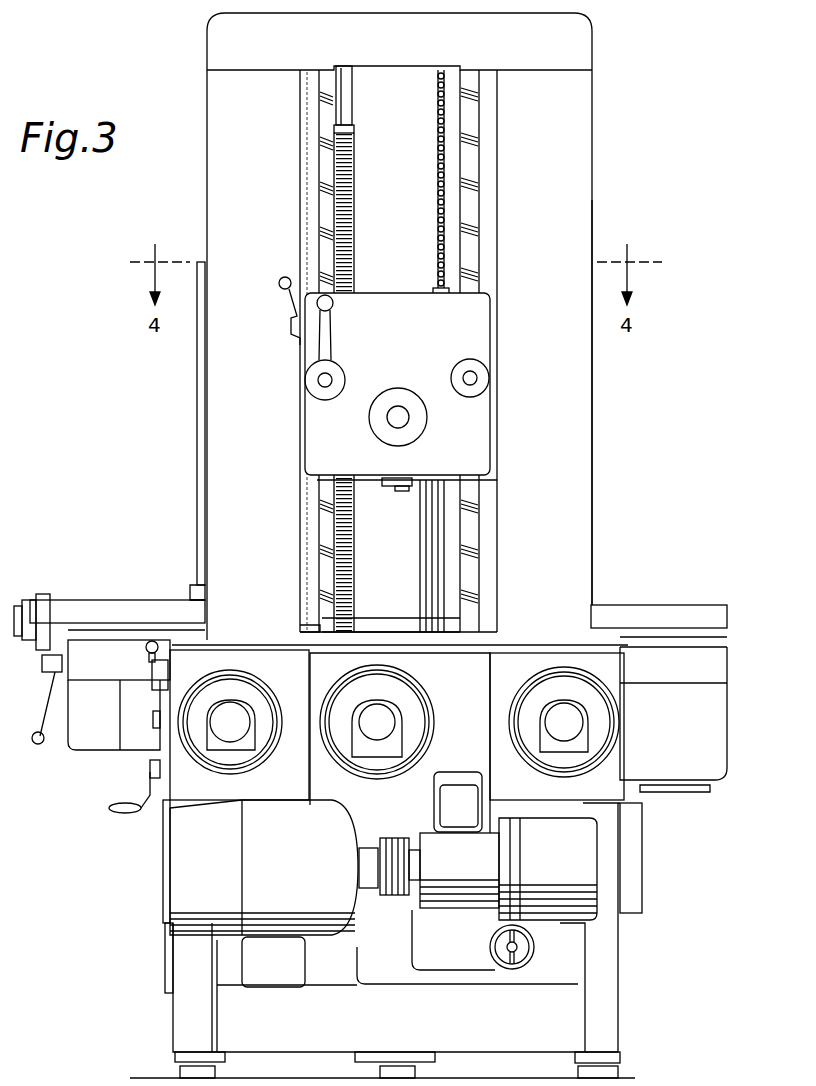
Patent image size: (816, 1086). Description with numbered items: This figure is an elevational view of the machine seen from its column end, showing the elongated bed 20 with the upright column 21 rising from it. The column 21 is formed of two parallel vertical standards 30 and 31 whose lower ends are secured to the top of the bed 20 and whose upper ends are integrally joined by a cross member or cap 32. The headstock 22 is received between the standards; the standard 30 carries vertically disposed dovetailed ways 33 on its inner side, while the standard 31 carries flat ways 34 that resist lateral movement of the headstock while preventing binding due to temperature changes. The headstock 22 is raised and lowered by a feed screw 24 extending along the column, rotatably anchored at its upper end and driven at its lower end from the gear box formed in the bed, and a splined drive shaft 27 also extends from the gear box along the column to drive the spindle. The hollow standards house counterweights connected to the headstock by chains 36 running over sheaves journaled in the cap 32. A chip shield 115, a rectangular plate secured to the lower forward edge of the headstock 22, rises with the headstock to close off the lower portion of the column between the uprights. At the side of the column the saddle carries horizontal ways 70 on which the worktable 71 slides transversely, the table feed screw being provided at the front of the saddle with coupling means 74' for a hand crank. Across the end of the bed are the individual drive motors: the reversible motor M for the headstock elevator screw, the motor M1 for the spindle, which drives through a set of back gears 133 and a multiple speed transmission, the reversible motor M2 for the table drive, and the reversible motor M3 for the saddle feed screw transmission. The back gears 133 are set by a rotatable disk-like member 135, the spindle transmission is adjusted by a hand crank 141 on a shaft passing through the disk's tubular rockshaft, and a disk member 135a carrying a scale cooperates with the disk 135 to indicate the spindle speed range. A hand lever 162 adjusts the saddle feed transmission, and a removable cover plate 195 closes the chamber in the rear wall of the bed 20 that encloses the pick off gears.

The bed 20 is at (186, 980).
The column 21 is at (592, 148).
The headstock 22 is at (482, 456).
The feed screw 24 is at (342, 218).
The splined drive shaft 27 is at (436, 565).
The standard 30 is at (215, 415).
The standard 31 is at (585, 393).
The cross member or cap 32 is at (213, 26).
The dovetailed ways 33 is at (333, 188).
The flat ways 34 is at (470, 202).
The chains 36 is at (437, 243).
The horizontal ways 70 is at (126, 612).
The worktable 71 is at (190, 596).
The coupling means 74' is at (27, 608).
The chip shield 115 is at (362, 580).
The back gears 133 is at (425, 832).
The disk-like member 135 is at (153, 718).
The disk member 135a is at (152, 760).
The hand crank 141 is at (145, 820).
The hand lever 162 is at (152, 664).
The removable cover plate 195 is at (645, 850).
The reversible electric motor M is at (406, 690).
The electric motor M1 is at (185, 878).
The reversible electric motor M2 is at (572, 668).
The reversible electric motor M3 is at (236, 668).